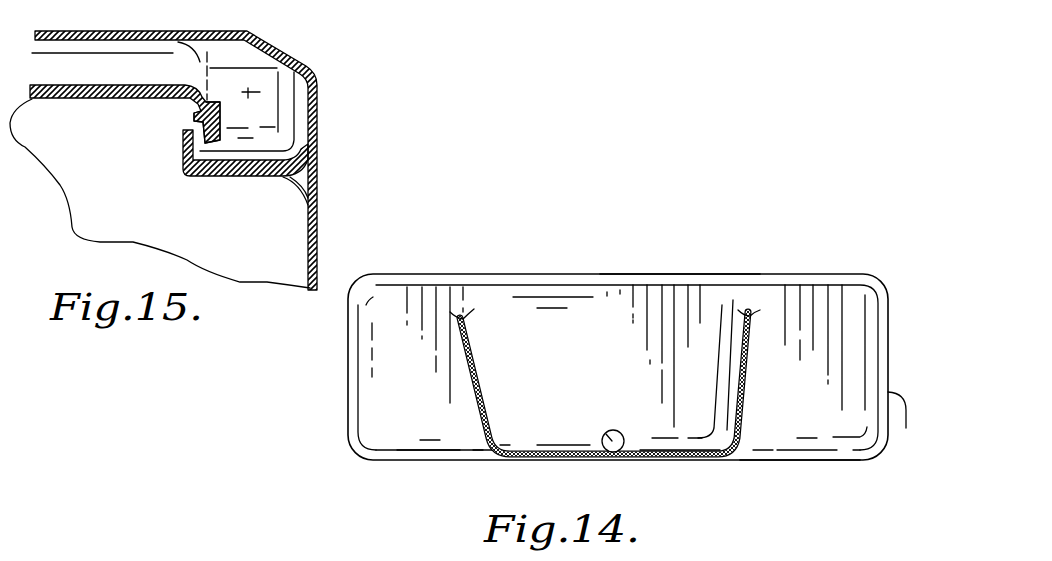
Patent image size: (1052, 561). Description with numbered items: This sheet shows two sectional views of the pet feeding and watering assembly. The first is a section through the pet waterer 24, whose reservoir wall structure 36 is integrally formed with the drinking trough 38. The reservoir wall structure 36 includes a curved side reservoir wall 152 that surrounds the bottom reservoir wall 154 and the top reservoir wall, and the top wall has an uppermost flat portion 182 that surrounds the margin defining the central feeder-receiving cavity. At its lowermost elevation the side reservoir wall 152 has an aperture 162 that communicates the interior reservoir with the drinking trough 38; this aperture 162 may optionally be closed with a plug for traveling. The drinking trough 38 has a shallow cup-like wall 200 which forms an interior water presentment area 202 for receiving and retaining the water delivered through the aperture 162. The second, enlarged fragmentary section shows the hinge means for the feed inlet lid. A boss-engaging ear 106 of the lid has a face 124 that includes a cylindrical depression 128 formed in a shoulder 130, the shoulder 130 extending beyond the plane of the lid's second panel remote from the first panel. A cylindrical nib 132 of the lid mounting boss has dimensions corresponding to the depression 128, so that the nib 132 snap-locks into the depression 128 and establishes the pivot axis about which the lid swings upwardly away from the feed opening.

In FIG. 14, the pet waterer 24 is at (858, 265).
In FIG. 14, the reservoir wall structure 36 is at (780, 347).
In FIG. 14, the drinking trough 38 is at (600, 318).
In FIG. 14, the uppermost flat portion 182 is at (678, 274).
In FIG. 14, the cup-like wall 200 is at (752, 385).
In FIG. 14, the water presentment area 202 is at (625, 385).
In FIG. 14, the aperture 162 is at (606, 432).
In FIG. 14, the bottom reservoir wall 154 is at (802, 454).
In FIG. 14, the side reservoir wall 152 is at (906, 428).
In FIG. 15, the boss-engaging ear 106 is at (316, 103).
In FIG. 15, the face 124 is at (200, 98).
In FIG. 15, the cylindrical depression 128 is at (213, 117).
In FIG. 15, the nib 132 is at (197, 123).
In FIG. 15, the shoulder 130 is at (190, 150).